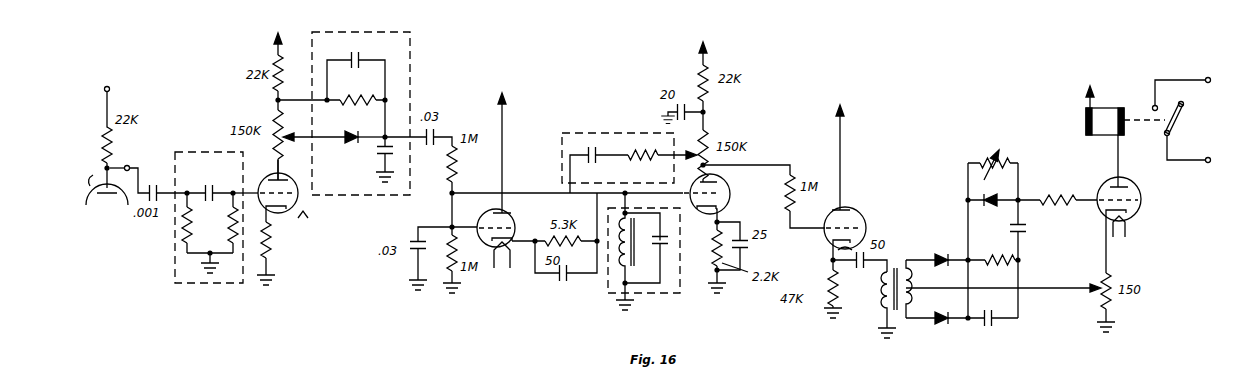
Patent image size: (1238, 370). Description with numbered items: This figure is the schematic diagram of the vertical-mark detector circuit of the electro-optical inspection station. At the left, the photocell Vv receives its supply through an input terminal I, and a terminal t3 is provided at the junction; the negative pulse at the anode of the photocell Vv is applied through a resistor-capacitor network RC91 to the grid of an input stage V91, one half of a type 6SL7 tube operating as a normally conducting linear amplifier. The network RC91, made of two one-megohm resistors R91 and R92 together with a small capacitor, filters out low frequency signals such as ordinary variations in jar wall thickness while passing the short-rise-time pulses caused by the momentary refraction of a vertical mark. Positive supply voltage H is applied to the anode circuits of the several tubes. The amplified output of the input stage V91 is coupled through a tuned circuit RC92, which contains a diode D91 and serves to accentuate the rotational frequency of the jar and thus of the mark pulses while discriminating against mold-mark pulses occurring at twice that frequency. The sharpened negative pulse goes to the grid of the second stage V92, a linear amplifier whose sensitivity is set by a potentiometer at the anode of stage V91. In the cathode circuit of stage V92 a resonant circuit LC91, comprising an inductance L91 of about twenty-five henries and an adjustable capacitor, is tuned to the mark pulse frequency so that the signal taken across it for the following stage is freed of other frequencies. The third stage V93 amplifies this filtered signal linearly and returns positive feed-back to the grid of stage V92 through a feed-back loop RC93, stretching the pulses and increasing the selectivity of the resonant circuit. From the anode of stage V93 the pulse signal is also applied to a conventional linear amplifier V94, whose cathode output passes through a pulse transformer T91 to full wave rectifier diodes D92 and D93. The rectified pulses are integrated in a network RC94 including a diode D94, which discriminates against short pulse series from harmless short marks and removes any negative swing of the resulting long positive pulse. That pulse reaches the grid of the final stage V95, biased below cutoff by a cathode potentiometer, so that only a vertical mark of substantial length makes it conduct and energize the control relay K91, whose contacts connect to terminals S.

The input terminal I is at (106, 99).
The photocell Vv is at (94, 180).
The terminal t3 is at (124, 159).
The resistor-capacitor network RC91 is at (203, 286).
The resistor R91 is at (219, 223).
The resistor R92 is at (184, 232).
The input stage V91 is at (283, 211).
The positive D.C. output voltage H is at (682, 113).
The tuned circuit RC92 is at (393, 26).
The diode D91 is at (353, 151).
The second stage V92 is at (511, 205).
The feed-back loop RC93 is at (588, 131).
The resonant circuit LC91 is at (613, 300).
The inductance L91 is at (617, 272).
The third stage V93 is at (723, 177).
The linear amplifier V94 is at (848, 214).
The pulse transformer T91 is at (898, 312).
The integrating network RC94 is at (1040, 130).
The full wave rectifier diode D92 is at (944, 326).
The full wave rectifier diode D93 is at (937, 248).
The diode D94 is at (965, 201).
The control relay K91 is at (1108, 106).
The switch terminals S is at (1213, 110).
The final stage V95 is at (1138, 210).